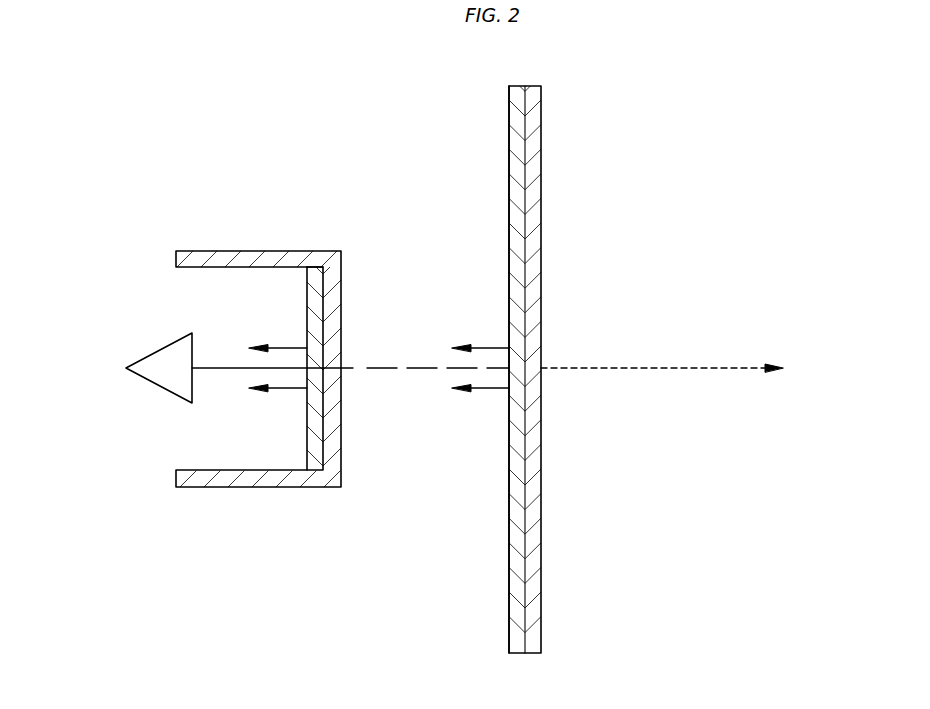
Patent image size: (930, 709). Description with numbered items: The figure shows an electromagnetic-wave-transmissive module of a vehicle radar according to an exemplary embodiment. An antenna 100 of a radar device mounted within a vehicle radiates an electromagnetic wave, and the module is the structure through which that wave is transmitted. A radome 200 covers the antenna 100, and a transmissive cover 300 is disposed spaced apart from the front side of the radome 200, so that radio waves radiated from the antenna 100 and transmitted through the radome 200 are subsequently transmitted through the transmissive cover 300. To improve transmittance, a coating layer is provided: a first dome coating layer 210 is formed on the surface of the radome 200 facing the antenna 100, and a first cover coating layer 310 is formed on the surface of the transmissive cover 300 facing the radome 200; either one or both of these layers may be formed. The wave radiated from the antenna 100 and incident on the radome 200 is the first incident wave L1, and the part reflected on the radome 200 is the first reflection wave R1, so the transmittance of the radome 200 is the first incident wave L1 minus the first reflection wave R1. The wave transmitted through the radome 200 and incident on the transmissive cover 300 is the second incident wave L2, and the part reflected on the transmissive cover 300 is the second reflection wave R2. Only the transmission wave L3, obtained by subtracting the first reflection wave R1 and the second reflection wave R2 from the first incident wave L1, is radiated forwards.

The antenna 100 is at (158, 348).
The radome 200 is at (265, 250).
The first dome coating layer 210 is at (313, 437).
The transmissive cover 300 is at (541, 168).
The first cover coating layer 310 is at (509, 168).
The first incident wave L1 is at (224, 368).
The second incident wave L2 is at (407, 368).
The transmission wave L3 is at (693, 368).
The first reflection wave R1 is at (278, 386).
The second reflection wave R2 is at (479, 386).